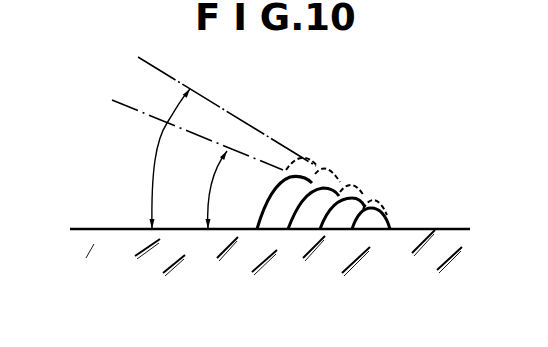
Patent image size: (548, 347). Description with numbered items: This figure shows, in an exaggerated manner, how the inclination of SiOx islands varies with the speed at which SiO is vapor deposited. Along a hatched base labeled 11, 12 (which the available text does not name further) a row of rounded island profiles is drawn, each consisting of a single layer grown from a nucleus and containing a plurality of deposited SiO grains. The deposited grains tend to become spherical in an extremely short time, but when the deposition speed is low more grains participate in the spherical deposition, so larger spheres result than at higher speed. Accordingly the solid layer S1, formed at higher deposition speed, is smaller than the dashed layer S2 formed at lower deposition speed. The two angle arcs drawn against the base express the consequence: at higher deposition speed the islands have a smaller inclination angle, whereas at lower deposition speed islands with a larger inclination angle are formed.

The base metal plate 11 is at (270, 275).
The base metal plate 12 is at (87, 251).
The layer formed at higher deposition speed S1 is at (381, 223).
The layer formed at lower deposition speed S2 is at (383, 207).